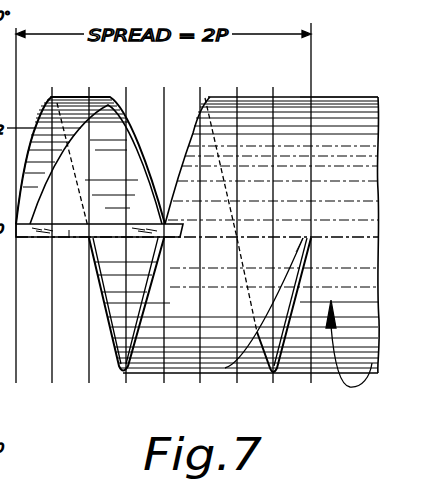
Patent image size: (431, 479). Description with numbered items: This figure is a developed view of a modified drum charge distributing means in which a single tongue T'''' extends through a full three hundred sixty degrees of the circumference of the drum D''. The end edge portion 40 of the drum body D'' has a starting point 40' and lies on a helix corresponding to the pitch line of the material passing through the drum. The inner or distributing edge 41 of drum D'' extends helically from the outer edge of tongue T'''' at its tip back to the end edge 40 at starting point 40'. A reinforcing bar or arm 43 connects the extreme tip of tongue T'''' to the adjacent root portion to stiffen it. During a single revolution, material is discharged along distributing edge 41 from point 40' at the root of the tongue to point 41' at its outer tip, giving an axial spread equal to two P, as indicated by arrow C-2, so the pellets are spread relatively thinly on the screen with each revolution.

The end edge portion 40 is at (271, 238).
The inner or distributing edge 41 is at (92, 146).
The reinforcing bar or arm 43 is at (66, 237).
The point at outer tip of tongue 41' is at (30, 214).
The starting point 40' is at (324, 219).
The tongue T'''' is at (112, 304).
The drum D'' is at (339, 75).
The section arrow C-2 is at (352, 343).